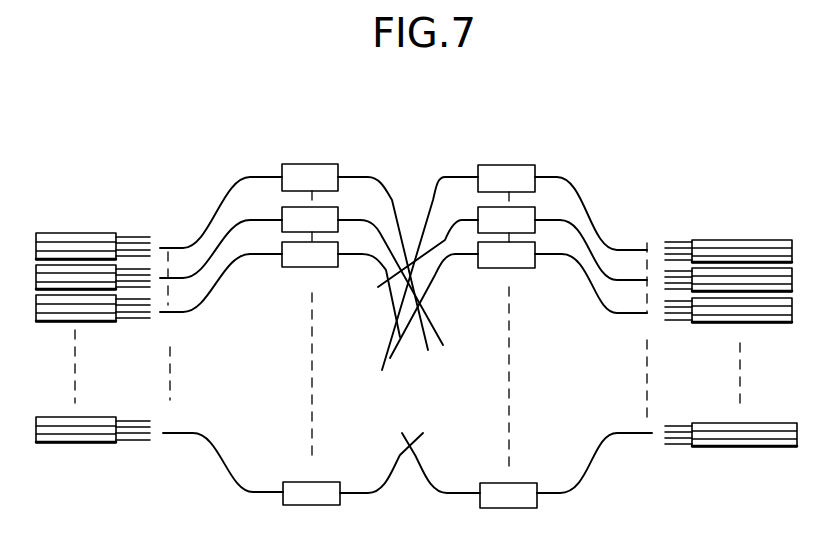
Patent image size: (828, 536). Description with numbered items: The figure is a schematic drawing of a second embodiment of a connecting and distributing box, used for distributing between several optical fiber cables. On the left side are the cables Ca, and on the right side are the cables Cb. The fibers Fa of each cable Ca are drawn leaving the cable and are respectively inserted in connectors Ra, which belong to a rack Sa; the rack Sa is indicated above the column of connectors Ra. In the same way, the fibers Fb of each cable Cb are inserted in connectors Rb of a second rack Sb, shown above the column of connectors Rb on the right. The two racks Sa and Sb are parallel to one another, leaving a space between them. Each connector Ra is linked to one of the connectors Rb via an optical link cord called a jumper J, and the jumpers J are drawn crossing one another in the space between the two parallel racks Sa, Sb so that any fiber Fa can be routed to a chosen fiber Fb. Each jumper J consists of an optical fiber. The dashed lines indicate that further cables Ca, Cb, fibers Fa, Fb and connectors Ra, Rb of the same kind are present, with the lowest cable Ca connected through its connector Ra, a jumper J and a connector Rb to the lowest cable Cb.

The cable Ca is at (70, 243).
The fibers Fa is at (212, 213).
The connector Ra is at (318, 173).
The rack Sa is at (341, 99).
The jumper J is at (392, 190).
The connector Rb is at (508, 175).
The rack Sb is at (528, 100).
The fibers Fb is at (598, 210).
The cable Cb is at (722, 245).